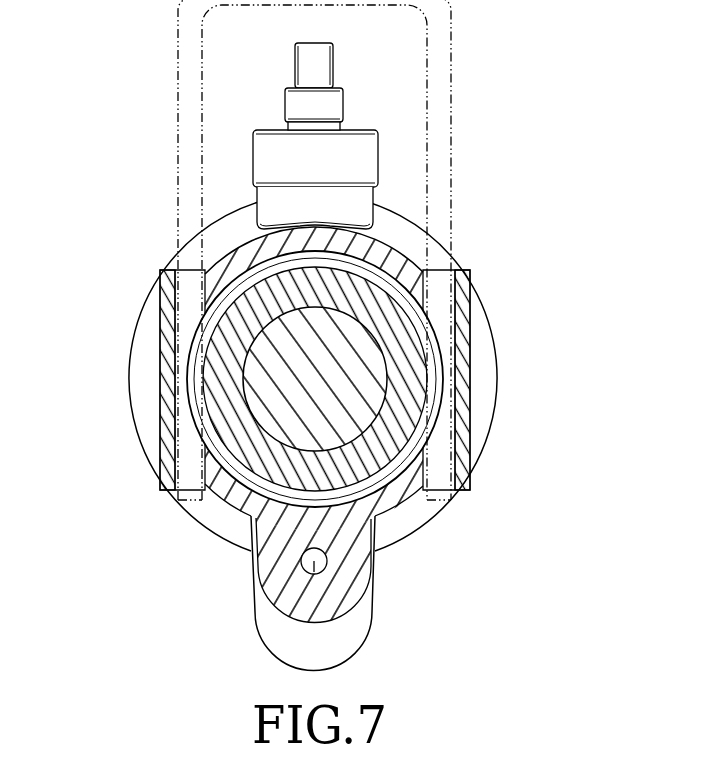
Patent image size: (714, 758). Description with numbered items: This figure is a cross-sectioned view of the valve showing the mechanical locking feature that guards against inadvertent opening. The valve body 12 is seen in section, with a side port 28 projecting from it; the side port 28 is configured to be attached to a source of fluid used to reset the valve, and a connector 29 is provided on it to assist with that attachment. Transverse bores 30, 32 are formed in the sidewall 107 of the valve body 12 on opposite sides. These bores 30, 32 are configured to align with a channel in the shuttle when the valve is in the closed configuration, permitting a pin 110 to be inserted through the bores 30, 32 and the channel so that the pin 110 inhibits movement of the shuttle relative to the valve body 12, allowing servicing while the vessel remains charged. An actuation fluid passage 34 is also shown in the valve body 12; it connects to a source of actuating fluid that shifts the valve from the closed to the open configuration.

The valve body 12 is at (499, 360).
The side port 28 is at (360, 210).
The connector 29 is at (333, 102).
The transverse bore 30 is at (188, 283).
The transverse bore 32 is at (440, 283).
The actuation fluid passage 34 is at (312, 566).
The sidewall 107 is at (160, 398).
The pin 110 is at (178, 100).